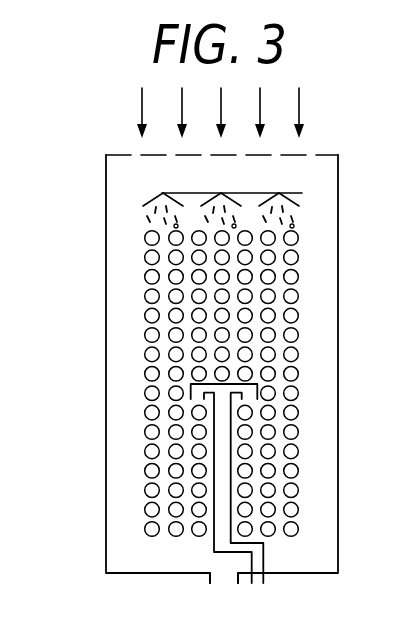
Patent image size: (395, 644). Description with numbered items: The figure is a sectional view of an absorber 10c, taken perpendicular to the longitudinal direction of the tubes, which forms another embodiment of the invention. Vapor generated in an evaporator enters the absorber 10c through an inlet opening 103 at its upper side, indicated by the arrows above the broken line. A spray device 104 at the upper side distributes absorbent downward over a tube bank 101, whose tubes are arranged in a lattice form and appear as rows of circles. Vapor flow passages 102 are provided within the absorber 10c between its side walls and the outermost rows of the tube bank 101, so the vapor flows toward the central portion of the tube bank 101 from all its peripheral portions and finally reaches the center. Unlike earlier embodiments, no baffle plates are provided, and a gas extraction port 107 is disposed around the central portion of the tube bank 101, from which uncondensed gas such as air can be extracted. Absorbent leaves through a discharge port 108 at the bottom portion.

The absorber 10c is at (100, 419).
The tube bank 101 is at (311, 238).
The vapor flow passages 102 is at (322, 333).
The inlet opening 103 is at (282, 155).
The spray device 104 is at (178, 192).
The gas extraction port 107 is at (247, 393).
The discharge port 108 is at (223, 575).